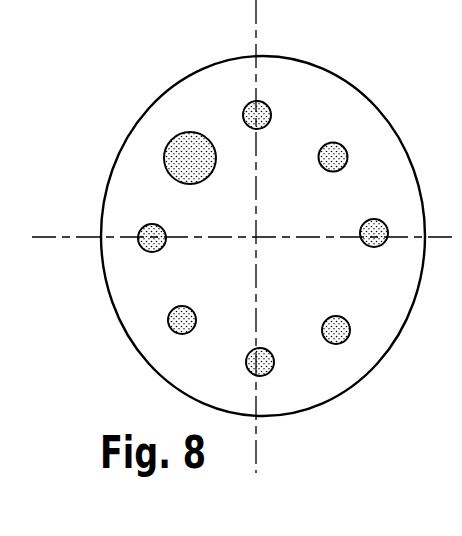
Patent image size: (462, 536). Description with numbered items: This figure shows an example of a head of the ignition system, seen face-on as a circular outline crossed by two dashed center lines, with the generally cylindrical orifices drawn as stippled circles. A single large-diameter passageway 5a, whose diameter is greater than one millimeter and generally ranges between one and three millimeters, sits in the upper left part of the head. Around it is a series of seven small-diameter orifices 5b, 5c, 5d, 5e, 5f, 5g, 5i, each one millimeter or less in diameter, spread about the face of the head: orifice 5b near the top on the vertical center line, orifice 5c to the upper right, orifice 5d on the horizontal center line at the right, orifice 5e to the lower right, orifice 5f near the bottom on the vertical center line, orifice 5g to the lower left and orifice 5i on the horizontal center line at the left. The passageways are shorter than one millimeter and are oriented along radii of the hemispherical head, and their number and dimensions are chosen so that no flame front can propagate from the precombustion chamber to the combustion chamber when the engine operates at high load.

The passageway 5a is at (167, 143).
The small-diameter orifice 5b is at (247, 102).
The small-diameter orifice 5c is at (338, 144).
The small-diameter orifice 5d is at (380, 219).
The small-diameter orifice 5e is at (350, 325).
The small-diameter orifice 5f is at (275, 363).
The small-diameter orifice 5g is at (168, 314).
The small-diameter orifice 5i is at (144, 224).